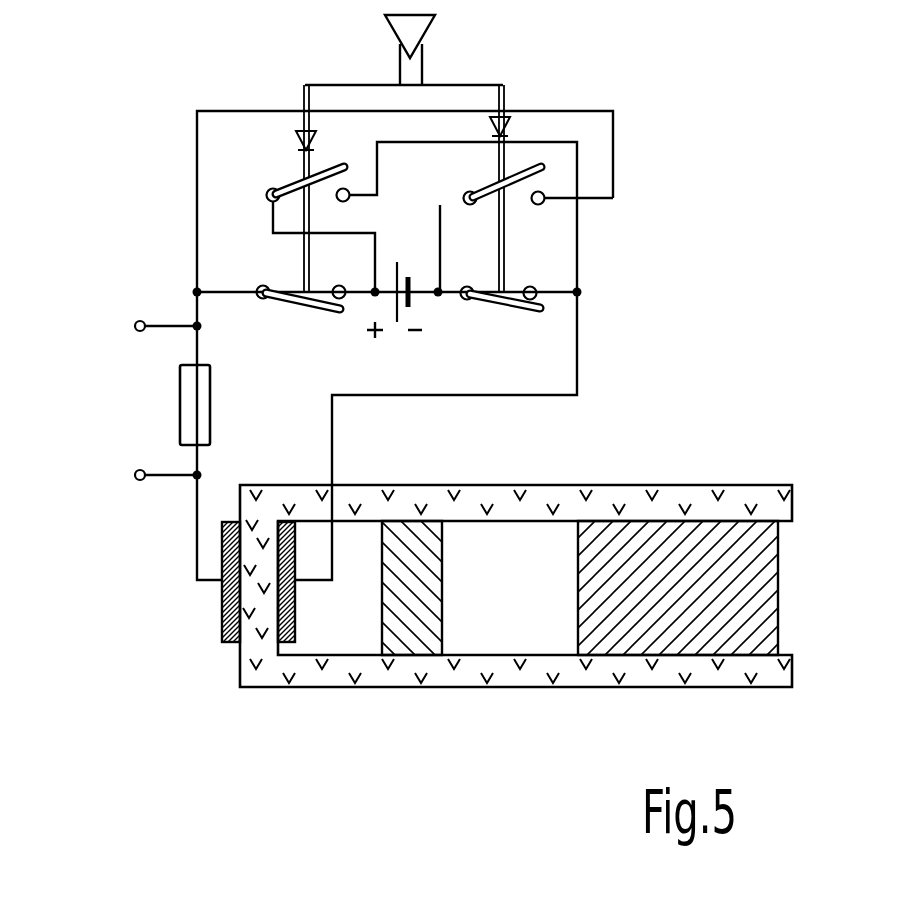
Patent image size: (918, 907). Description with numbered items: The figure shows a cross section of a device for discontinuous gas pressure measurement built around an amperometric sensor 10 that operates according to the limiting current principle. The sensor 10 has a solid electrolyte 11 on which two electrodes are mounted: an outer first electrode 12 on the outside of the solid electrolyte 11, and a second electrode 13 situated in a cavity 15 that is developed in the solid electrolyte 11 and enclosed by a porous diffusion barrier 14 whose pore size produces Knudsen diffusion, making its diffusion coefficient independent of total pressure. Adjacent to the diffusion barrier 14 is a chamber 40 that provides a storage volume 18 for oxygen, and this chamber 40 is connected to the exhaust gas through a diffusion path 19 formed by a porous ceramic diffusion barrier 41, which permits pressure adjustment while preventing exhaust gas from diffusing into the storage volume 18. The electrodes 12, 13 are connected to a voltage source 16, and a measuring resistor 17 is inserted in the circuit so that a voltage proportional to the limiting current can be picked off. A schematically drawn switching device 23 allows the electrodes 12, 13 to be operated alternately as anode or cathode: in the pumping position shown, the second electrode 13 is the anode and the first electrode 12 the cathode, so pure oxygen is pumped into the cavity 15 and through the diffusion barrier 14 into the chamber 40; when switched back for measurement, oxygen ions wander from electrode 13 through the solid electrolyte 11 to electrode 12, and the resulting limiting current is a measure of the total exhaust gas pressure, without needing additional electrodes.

The amperometric sensor 10 is at (491, 603).
The solid electrolyte 11 is at (292, 668).
The first electrode 12 is at (222, 610).
The second electrode 13 is at (295, 617).
The porous diffusion barrier 14 is at (420, 645).
The cavity 15 is at (353, 555).
The voltage source 16 is at (413, 315).
The measuring resistor 17 is at (183, 407).
The storage volume 18 is at (490, 616).
The diffusion path 19 is at (660, 601).
The switching device 23 is at (594, 259).
The chamber 40 is at (533, 608).
The porous diffusion barrier 41 is at (697, 602).